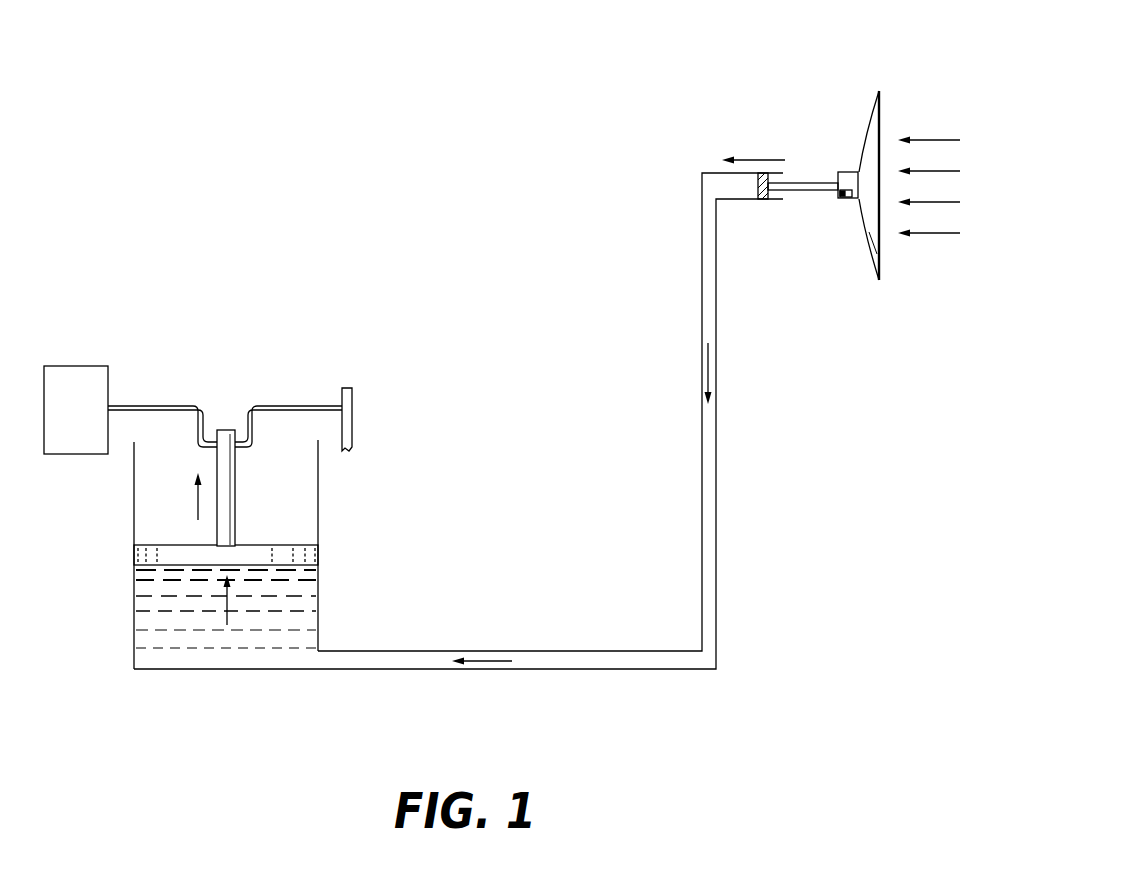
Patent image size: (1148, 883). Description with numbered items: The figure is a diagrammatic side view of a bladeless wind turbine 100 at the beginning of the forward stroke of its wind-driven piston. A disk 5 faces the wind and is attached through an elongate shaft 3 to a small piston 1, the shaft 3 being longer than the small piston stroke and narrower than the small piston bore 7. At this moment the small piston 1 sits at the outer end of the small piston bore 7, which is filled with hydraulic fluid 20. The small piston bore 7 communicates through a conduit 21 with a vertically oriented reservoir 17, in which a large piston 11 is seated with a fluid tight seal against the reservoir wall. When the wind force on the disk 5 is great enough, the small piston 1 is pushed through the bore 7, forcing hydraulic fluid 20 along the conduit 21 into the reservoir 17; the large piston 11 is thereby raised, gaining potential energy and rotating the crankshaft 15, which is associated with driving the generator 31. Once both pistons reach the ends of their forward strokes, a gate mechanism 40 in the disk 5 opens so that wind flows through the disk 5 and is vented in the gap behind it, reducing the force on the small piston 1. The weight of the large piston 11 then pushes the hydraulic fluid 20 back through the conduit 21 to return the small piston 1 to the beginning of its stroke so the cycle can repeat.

The bladeless wind turbine 100 is at (256, 99).
The small piston 1 is at (763, 200).
The shaft 3 is at (808, 181).
The disk 5 is at (868, 122).
The small piston bore 7 is at (702, 184).
The large piston 11 is at (303, 545).
The crankshaft 15 is at (269, 405).
The reservoir 17 is at (138, 597).
The hydraulic fluid 20 is at (704, 271).
The conduit 21 is at (717, 487).
The generator 31 is at (73, 366).
The gate mechanism 40 is at (841, 218).